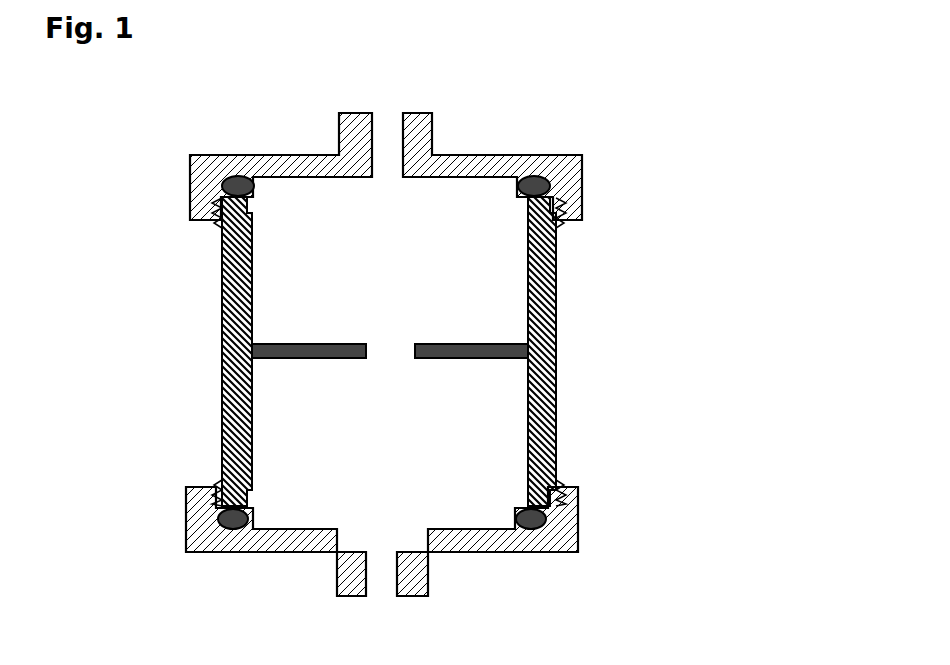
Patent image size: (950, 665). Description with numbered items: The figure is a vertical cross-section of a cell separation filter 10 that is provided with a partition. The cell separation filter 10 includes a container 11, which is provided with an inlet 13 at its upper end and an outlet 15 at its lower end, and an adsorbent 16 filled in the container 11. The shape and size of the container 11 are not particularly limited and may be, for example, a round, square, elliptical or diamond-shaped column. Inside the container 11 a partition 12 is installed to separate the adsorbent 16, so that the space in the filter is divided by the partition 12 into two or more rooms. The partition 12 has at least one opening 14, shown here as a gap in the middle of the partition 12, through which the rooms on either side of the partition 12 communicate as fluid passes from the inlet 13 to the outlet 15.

The cell separation filter 10 is at (603, 577).
The container 11 is at (221, 282).
The partition 12 is at (276, 356).
The inlet 13 is at (392, 107).
The opening of the partition 14 is at (390, 357).
The outlet 15 is at (378, 595).
The adsorbent 16 is at (378, 447).